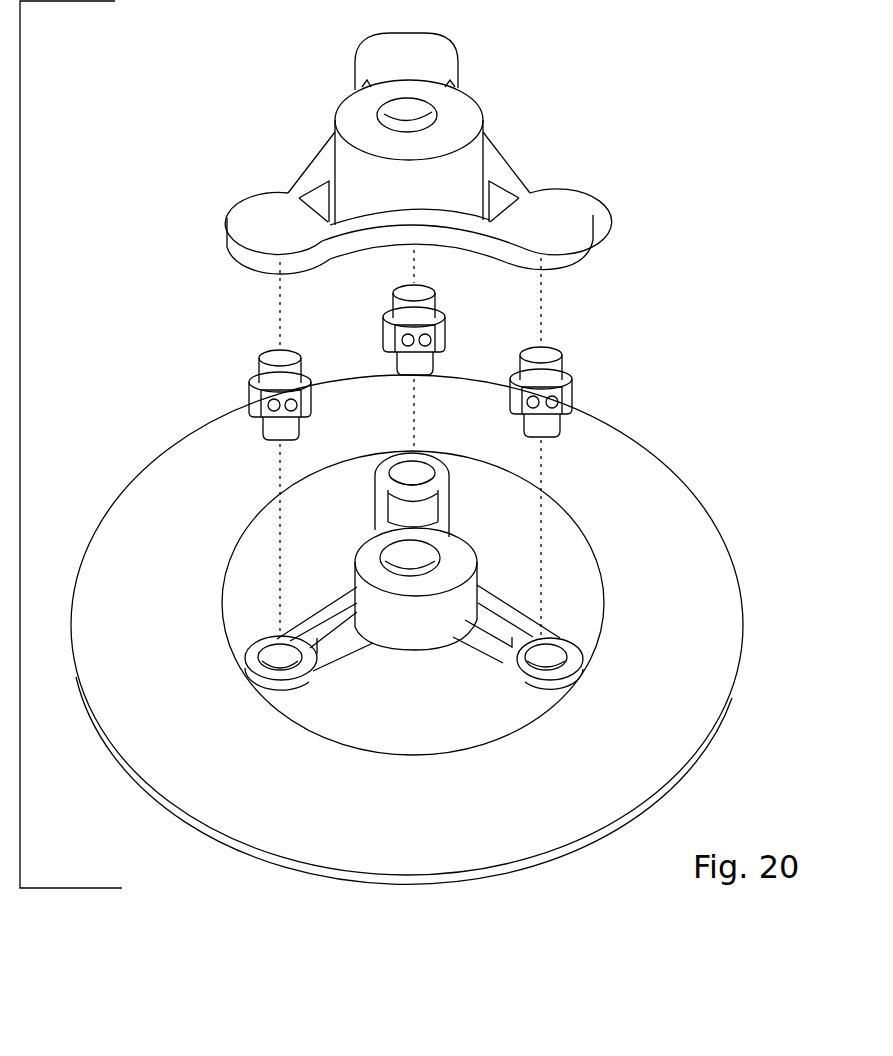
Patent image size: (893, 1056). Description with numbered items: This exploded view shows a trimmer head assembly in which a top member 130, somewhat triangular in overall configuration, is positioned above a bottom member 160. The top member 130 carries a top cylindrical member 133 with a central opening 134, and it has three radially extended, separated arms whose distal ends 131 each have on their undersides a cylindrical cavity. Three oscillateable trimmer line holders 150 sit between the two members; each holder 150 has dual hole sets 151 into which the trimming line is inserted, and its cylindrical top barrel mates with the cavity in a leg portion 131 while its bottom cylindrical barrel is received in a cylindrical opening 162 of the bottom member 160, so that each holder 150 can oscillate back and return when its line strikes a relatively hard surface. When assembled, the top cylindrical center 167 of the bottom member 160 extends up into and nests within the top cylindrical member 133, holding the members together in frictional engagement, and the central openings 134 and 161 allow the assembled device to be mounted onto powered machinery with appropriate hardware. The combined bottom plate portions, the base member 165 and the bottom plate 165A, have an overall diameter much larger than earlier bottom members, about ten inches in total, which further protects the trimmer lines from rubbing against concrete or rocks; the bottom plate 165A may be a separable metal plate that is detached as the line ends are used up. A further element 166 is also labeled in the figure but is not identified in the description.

The top member 130 is at (514, 159).
The distal ends of radially extending arms 131 is at (438, 47).
The top cylindrical member 133 is at (350, 164).
The central opening 134 is at (414, 108).
The trimmer line holder 150 is at (569, 372).
The dual hole sets 151 is at (568, 400).
The bottom member 160 is at (699, 487).
The central opening 161 is at (392, 556).
The cylindrical opening 162 is at (543, 651).
The base member 165 is at (343, 708).
The bottom plate 165A is at (141, 757).
The arm 166 is at (500, 665).
The top cylindrical center 167 is at (418, 613).